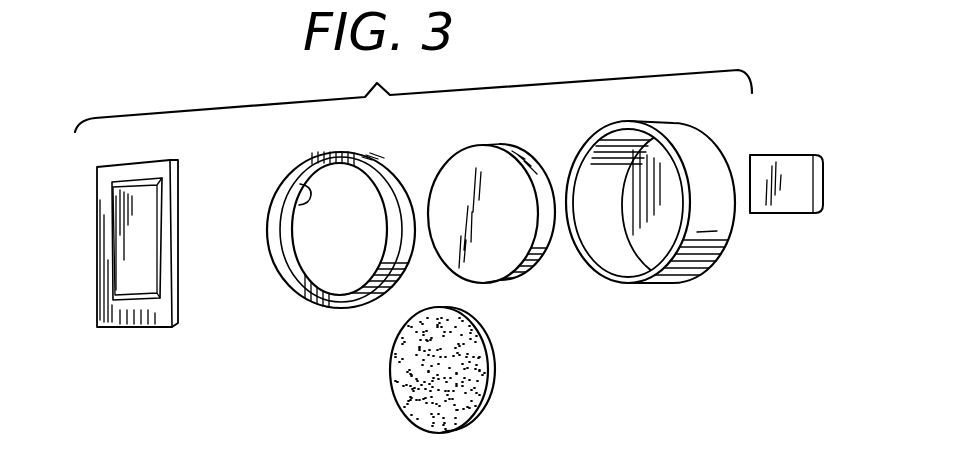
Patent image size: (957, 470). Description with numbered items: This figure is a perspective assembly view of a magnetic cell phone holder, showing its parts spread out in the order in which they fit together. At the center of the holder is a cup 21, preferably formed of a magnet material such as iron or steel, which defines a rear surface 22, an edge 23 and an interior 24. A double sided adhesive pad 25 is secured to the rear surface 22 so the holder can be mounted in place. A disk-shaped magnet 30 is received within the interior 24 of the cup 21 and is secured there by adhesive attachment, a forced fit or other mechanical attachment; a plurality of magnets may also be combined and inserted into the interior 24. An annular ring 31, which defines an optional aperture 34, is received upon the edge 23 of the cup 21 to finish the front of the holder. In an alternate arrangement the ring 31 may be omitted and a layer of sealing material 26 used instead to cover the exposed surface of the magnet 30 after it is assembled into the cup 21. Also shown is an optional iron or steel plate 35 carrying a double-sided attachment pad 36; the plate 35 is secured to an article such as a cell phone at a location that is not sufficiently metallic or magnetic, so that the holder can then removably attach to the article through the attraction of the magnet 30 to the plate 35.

The cup 21 is at (659, 123).
The rear surface 22 is at (663, 184).
The edge 23 is at (591, 142).
The interior 24 is at (610, 233).
The double sided adhesive pad 25 is at (792, 155).
The layer of sealing material 26 is at (490, 383).
The disk-shaped magnet 30 is at (480, 144).
The annular ring 31 is at (346, 152).
The aperture 34 is at (288, 207).
The iron or steel plate 35 is at (178, 128).
The double-sided attachment pad 36 is at (148, 236).